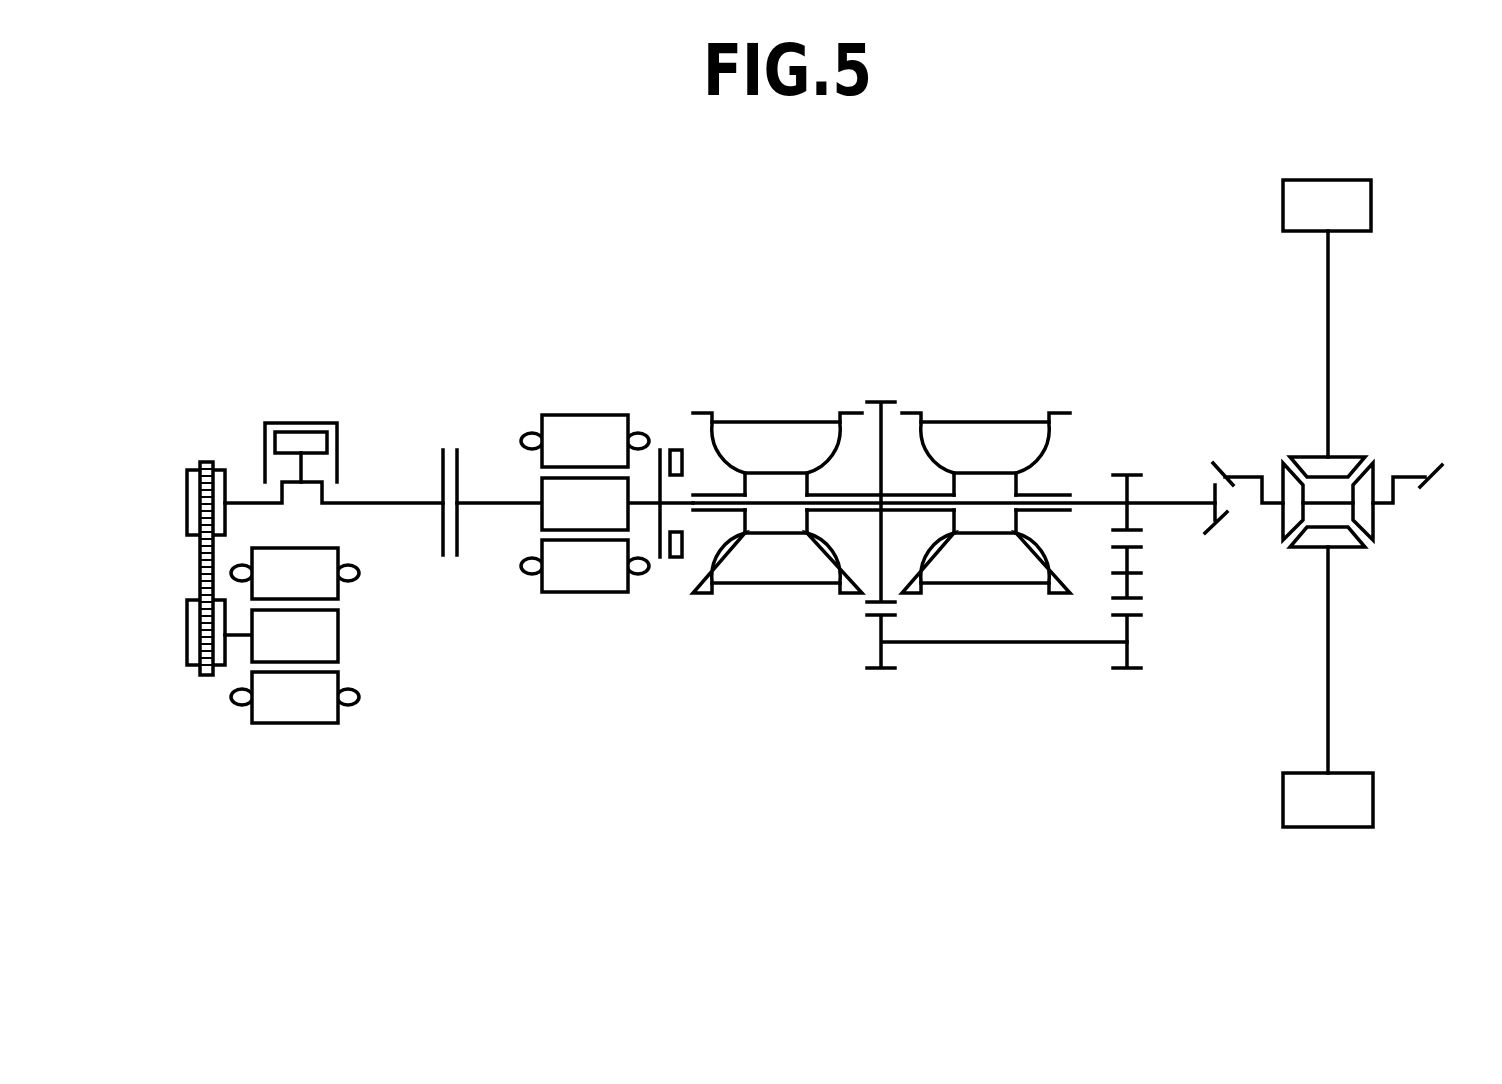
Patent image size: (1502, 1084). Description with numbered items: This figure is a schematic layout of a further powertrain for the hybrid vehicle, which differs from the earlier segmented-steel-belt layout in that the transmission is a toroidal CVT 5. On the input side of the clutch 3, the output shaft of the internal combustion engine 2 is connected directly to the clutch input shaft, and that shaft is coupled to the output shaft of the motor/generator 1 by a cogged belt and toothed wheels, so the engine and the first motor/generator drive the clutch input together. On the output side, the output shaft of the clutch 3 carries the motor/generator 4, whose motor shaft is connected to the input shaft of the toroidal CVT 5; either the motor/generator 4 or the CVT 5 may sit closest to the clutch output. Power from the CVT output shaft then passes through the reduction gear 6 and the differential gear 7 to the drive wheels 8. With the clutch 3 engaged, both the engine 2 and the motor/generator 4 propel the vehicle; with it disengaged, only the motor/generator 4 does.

The motor/generator 1 is at (298, 628).
The internal combustion engine 2 is at (300, 431).
The clutch 3 is at (447, 537).
The motor/generator 4 is at (584, 468).
The toroidal CVT 5 is at (954, 559).
The reduction gear 6 is at (1211, 529).
The differential gear 7 is at (1382, 484).
The drive wheels 8 is at (1326, 178).